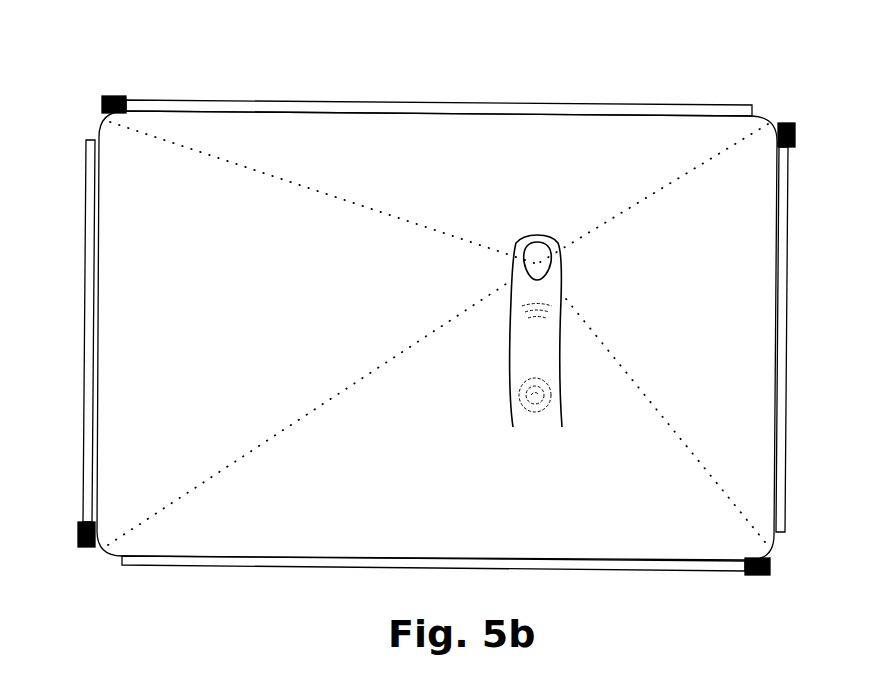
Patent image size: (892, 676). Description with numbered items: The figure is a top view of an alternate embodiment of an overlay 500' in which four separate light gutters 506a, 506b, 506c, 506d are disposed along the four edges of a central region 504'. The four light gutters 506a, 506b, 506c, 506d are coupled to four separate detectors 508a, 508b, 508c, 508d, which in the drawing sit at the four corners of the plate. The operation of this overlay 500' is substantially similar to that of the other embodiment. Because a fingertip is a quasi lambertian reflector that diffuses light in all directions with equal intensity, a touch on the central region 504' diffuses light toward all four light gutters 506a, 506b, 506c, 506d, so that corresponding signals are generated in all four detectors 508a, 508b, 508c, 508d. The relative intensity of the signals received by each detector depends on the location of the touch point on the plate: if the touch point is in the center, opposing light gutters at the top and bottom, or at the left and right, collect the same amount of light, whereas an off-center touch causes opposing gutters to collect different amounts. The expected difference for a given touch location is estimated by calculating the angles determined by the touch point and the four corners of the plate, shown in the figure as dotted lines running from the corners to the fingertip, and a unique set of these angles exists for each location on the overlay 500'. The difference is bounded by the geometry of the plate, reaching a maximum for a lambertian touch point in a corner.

The overlay 500' is at (442, 320).
The central region 504' is at (437, 335).
The light gutter 506a is at (268, 105).
The light gutter 506b is at (787, 242).
The light gutter 506c is at (618, 567).
The light gutter 506d is at (84, 418).
The detector 508a is at (119, 96).
The detector 508b is at (795, 138).
The detector 508c is at (753, 578).
The detector 508d is at (78, 530).